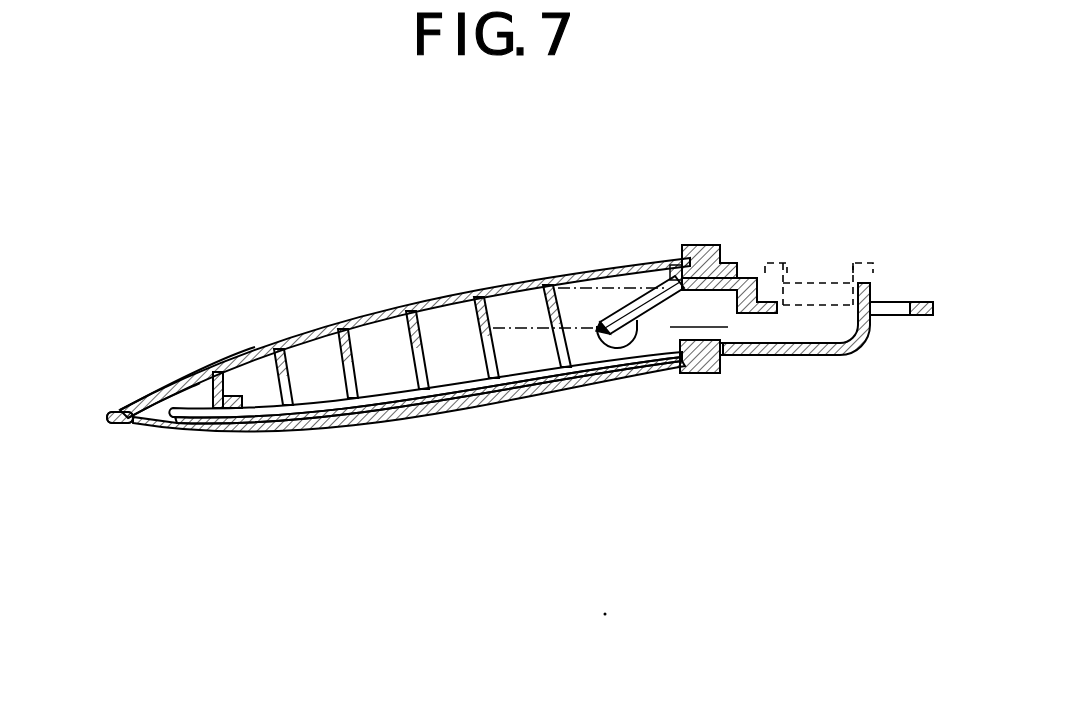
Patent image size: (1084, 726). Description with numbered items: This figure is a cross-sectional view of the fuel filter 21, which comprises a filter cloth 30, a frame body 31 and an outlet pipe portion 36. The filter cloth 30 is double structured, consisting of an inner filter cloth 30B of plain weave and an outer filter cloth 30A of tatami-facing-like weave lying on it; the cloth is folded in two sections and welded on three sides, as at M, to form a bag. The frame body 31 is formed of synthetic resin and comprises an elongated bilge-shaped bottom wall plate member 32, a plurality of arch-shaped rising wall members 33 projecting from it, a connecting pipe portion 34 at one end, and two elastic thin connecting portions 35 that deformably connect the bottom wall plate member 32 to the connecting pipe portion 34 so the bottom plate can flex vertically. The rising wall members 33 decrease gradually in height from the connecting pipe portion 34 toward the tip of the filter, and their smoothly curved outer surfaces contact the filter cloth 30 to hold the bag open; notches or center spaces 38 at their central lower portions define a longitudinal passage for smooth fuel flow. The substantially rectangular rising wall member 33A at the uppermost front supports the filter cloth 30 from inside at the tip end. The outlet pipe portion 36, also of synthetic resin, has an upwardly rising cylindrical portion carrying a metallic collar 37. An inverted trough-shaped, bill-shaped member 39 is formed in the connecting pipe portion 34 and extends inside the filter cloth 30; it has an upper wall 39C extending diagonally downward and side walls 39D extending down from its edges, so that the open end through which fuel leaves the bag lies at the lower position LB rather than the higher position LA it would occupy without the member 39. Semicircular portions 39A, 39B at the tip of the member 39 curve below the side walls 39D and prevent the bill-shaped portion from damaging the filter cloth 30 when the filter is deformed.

The fuel filter 21 is at (355, 298).
The filter cloth 30 is at (193, 221).
The outer filter cloth 30A is at (237, 357).
The inner filter cloth 30B is at (188, 392).
The frame body 31 is at (368, 416).
The bottom wall plate member 32 is at (418, 408).
The rising wall members 33 is at (413, 306).
The rising wall member 33A is at (219, 375).
The connecting pipe portion 34 is at (683, 260).
The elastic thin connecting portions 35 is at (672, 370).
The outlet pipe portion 36 is at (830, 357).
The metallic collar 37 is at (871, 290).
The center spaces 38 is at (452, 390).
The inverted trough-shaped member 39 is at (641, 302).
The semicircular portion 39A is at (611, 345).
The semicircular portion 39B is at (611, 345).
The upper wall 39C is at (603, 305).
The side walls 39D is at (699, 311).
The high position LA is at (577, 306).
The lower position LB is at (517, 332).
The weld M is at (118, 425).